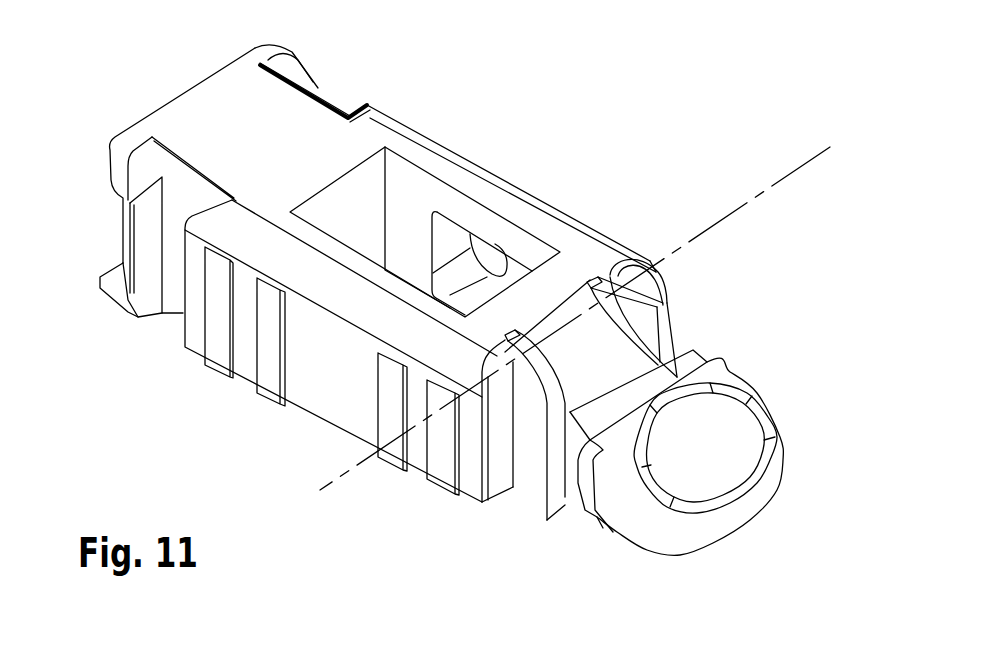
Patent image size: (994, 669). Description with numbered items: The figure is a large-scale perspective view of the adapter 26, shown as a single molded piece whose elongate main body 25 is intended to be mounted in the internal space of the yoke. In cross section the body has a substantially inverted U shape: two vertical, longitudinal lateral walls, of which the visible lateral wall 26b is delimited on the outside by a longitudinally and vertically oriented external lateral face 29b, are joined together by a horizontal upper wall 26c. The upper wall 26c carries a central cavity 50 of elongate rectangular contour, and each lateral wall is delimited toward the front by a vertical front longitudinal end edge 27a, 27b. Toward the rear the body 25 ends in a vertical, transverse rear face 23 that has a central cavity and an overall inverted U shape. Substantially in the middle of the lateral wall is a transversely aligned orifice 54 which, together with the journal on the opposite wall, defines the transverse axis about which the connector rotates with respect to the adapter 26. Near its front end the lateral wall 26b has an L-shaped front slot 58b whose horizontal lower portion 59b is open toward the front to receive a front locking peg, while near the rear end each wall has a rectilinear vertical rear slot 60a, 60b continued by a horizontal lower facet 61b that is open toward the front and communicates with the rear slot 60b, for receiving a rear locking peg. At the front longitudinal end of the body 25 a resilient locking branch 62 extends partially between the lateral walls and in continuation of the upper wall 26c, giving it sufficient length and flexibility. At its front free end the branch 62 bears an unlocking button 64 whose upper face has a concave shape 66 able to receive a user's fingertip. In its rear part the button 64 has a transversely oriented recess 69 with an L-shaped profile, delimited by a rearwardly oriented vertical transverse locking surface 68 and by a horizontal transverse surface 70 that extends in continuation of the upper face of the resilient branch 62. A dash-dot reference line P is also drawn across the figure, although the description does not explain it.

The rear face 23 is at (165, 105).
The main body 25 is at (417, 125).
The adapter 26 is at (578, 160).
The lateral wall 26b is at (485, 195).
The upper wall 26c is at (552, 300).
The front longitudinal end edge 27a is at (673, 340).
The front longitudinal end edge 27b is at (560, 492).
The external lateral face 29b is at (317, 380).
The central cavity 50 is at (373, 168).
The orifice 54 is at (508, 257).
The front slot 58b is at (528, 448).
The lower portion 59b is at (455, 492).
The rear slot 60a is at (330, 97).
The rear slot 60b is at (168, 213).
The lower facet 61b is at (118, 310).
The resilient locking branch 62 is at (655, 262).
The unlocking button 64 is at (755, 424).
The concave shape 66 is at (710, 447).
The locking surface 68 is at (595, 510).
The recess 69 is at (703, 362).
The horizontal transverse surface 70 is at (683, 385).
The axis P is at (350, 467).